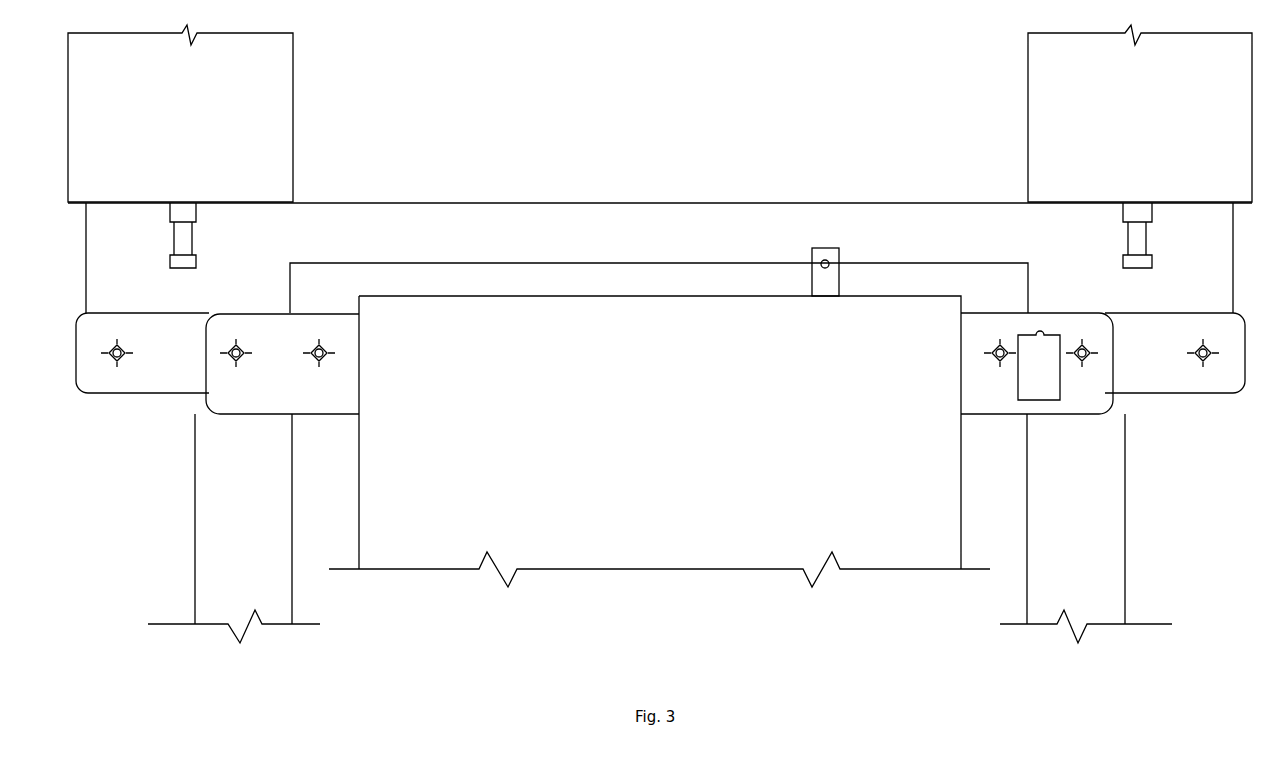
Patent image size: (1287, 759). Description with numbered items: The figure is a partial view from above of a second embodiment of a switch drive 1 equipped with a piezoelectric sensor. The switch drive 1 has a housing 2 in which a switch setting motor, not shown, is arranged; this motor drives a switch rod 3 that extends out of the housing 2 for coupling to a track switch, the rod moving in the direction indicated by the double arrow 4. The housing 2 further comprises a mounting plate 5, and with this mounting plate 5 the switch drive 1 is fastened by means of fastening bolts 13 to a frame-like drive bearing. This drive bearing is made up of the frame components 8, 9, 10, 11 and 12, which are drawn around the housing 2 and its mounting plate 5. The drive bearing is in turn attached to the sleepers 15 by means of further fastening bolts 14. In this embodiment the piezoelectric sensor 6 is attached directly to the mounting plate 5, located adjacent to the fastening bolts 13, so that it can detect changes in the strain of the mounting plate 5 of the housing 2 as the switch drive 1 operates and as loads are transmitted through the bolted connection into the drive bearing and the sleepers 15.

The switch drive 1 is at (446, 600).
The housing 2 is at (560, 322).
The switch rod 3 is at (816, 290).
The double arrow 4 is at (829, 331).
The mounting plate 5 is at (1002, 325).
The piezoelectric sensor 6 is at (1037, 380).
The frame component 8 is at (1103, 545).
The frame component 9 is at (1224, 385).
The frame component 10 is at (409, 240).
The frame component 11 is at (92, 397).
The frame component 12 is at (215, 538).
The fastening bolts 13 is at (232, 358).
The fastening bolts 14 is at (178, 238).
The sleepers 15 is at (267, 115).